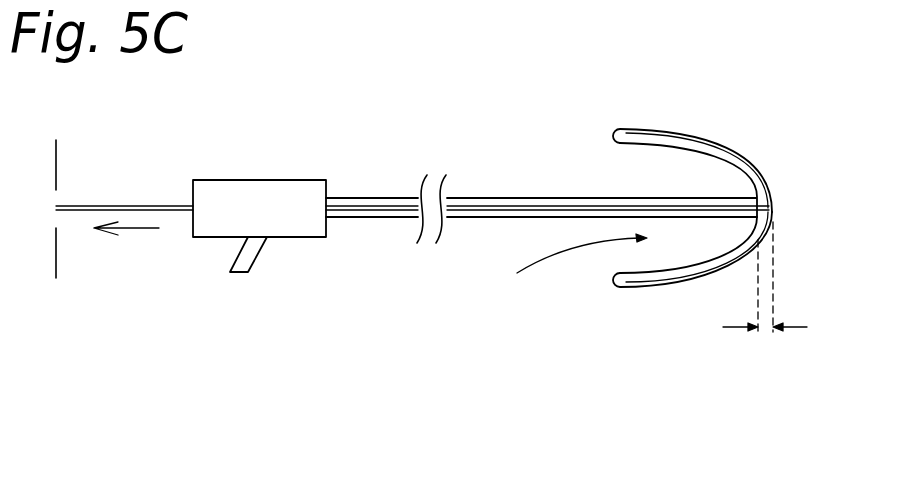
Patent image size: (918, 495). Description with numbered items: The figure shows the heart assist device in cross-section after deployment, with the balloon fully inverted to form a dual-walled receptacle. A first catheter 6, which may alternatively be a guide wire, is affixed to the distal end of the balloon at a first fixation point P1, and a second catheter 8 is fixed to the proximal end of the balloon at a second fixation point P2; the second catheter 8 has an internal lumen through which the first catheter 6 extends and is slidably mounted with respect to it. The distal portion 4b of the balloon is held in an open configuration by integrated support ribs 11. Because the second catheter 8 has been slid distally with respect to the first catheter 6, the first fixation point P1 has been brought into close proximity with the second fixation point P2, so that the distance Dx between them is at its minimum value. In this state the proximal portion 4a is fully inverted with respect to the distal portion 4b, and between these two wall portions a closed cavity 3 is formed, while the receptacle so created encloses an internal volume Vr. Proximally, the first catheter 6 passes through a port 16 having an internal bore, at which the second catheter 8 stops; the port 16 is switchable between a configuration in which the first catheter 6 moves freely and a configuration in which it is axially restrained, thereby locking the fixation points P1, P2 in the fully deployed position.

The first catheter 6 is at (113, 208).
The port 16 is at (262, 180).
The second catheter 8 is at (490, 198).
The closed cavity 3 is at (666, 213).
The proximal portion 4a is at (636, 273).
The distal portion 4b is at (700, 131).
The integrated support ribs 11 is at (740, 150).
The internal volume Vr is at (569, 262).
The first fixation point P1 is at (773, 207).
The second fixation point P2 is at (773, 240).
The distance Dx is at (807, 327).